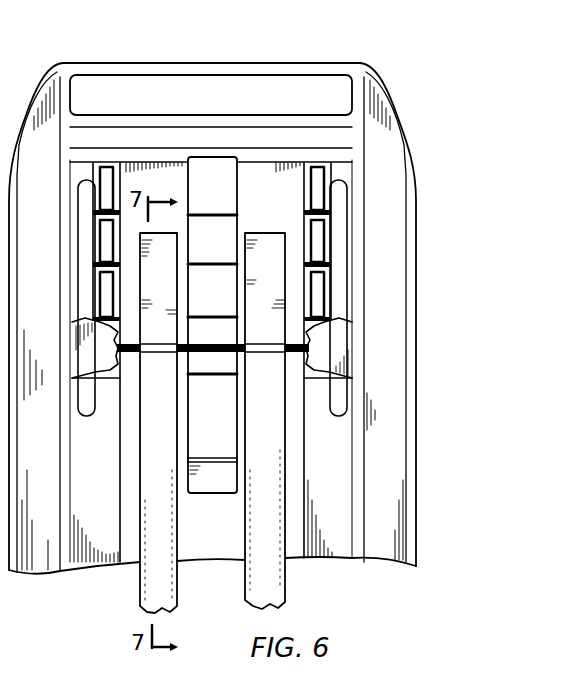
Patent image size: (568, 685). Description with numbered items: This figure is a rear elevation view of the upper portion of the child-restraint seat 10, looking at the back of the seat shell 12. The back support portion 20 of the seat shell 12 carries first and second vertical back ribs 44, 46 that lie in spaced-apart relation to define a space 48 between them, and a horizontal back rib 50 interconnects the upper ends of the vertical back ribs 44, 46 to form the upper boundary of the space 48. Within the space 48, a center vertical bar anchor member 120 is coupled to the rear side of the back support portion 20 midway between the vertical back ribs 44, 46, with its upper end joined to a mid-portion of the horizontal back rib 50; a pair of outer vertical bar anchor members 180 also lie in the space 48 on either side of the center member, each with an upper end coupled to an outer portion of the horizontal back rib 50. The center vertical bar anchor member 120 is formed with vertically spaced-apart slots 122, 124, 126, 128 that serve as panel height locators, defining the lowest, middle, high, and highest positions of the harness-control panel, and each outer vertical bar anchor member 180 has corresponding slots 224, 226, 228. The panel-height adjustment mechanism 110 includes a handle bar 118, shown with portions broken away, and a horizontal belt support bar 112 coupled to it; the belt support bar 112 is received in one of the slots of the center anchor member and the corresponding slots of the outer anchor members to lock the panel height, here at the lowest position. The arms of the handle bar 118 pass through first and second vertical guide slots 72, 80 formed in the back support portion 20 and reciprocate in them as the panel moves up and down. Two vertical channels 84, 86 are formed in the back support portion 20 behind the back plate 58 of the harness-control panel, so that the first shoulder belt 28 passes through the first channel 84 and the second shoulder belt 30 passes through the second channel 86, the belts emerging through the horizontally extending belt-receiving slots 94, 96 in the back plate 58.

The child-restraint seat 10 is at (340, 52).
The seat shell 12 is at (376, 110).
The back support portion 20 is at (126, 69).
The first shoulder belt 28 is at (152, 584).
The second shoulder belt 30 is at (257, 573).
The first vertical back rib 44 is at (52, 534).
The second vertical back rib 46 is at (376, 534).
The space 48 is at (251, 170).
The horizontal back rib 50 is at (200, 104).
The back plate 58 is at (252, 233).
The first vertical guide slot 72 is at (86, 176).
The second vertical guide slot 80 is at (340, 178).
The first vertical channel 84 is at (147, 328).
The second vertical channel 86 is at (273, 250).
The first shoulder belt-receiving slot 94 is at (136, 362).
The second shoulder belt-receiving slot 96 is at (247, 334).
The panel-height adjustment mechanism 110 is at (181, 180).
The belt support bar 112 is at (294, 357).
The handle bar 118 is at (347, 350).
The center vertical bar anchor member 120 is at (218, 150).
The slot 122 is at (210, 376).
The slot 124 is at (205, 315).
The slot 126 is at (205, 262).
The slot 128 is at (205, 212).
The outer vertical bar anchor member 180 is at (107, 157).
The slot 224 is at (107, 317).
The slot 226 is at (107, 262).
The slot 228 is at (100, 213).